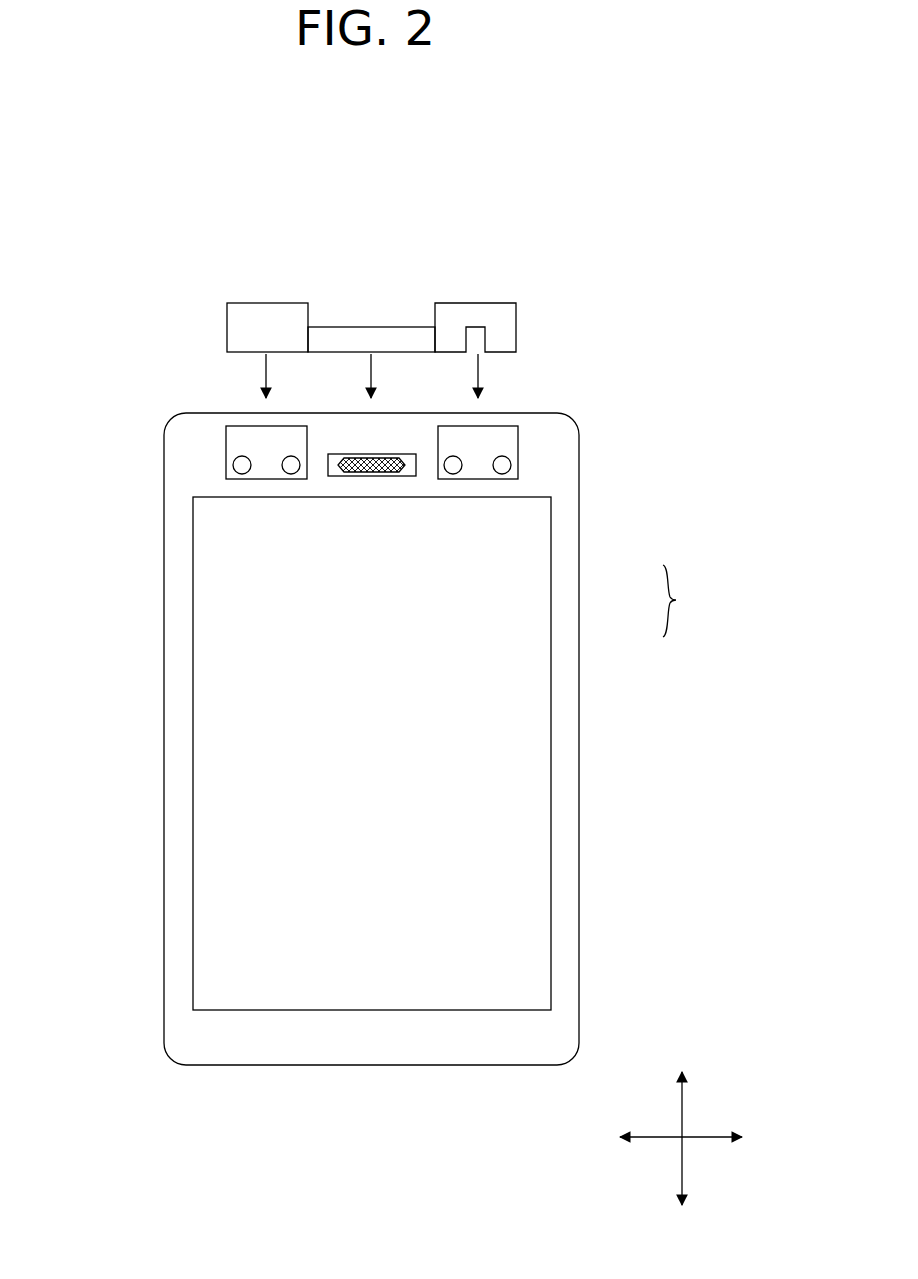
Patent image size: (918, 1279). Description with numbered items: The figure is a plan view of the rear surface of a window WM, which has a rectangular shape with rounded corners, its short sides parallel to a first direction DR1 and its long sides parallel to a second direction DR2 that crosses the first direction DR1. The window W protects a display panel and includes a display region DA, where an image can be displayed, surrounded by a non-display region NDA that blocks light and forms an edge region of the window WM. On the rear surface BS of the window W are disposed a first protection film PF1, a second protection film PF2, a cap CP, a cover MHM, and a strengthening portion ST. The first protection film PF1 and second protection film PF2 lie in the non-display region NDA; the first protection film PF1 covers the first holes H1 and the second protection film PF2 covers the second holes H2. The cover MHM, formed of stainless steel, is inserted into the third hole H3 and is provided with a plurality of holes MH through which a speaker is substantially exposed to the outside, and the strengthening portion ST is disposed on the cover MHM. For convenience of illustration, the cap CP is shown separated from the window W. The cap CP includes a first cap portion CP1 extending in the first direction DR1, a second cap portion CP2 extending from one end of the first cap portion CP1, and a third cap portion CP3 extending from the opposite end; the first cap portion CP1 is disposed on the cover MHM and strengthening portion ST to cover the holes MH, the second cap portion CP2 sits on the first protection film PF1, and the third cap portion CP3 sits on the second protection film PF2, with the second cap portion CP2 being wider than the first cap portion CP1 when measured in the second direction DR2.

The window WM is at (579, 192).
The rear surface BS is at (538, 735).
The display region DA is at (532, 621).
The non-display region NDA is at (559, 582).
The window W is at (680, 601).
The first protection film PF1 is at (225, 438).
The second protection film PF2 is at (519, 441).
The first holes H1 is at (233, 465).
The second holes H2 is at (511, 465).
The third hole H3 is at (389, 476).
The holes MH is at (330, 467).
The cover MHM is at (367, 481).
The strengthening portion ST is at (418, 467).
The cap CP is at (371, 293).
The first cap portion CP1 is at (373, 338).
The second cap portion CP2 is at (265, 309).
The third cap portion CP3 is at (475, 292).
The first direction DR1 is at (706, 1140).
The second direction DR2 is at (682, 1122).